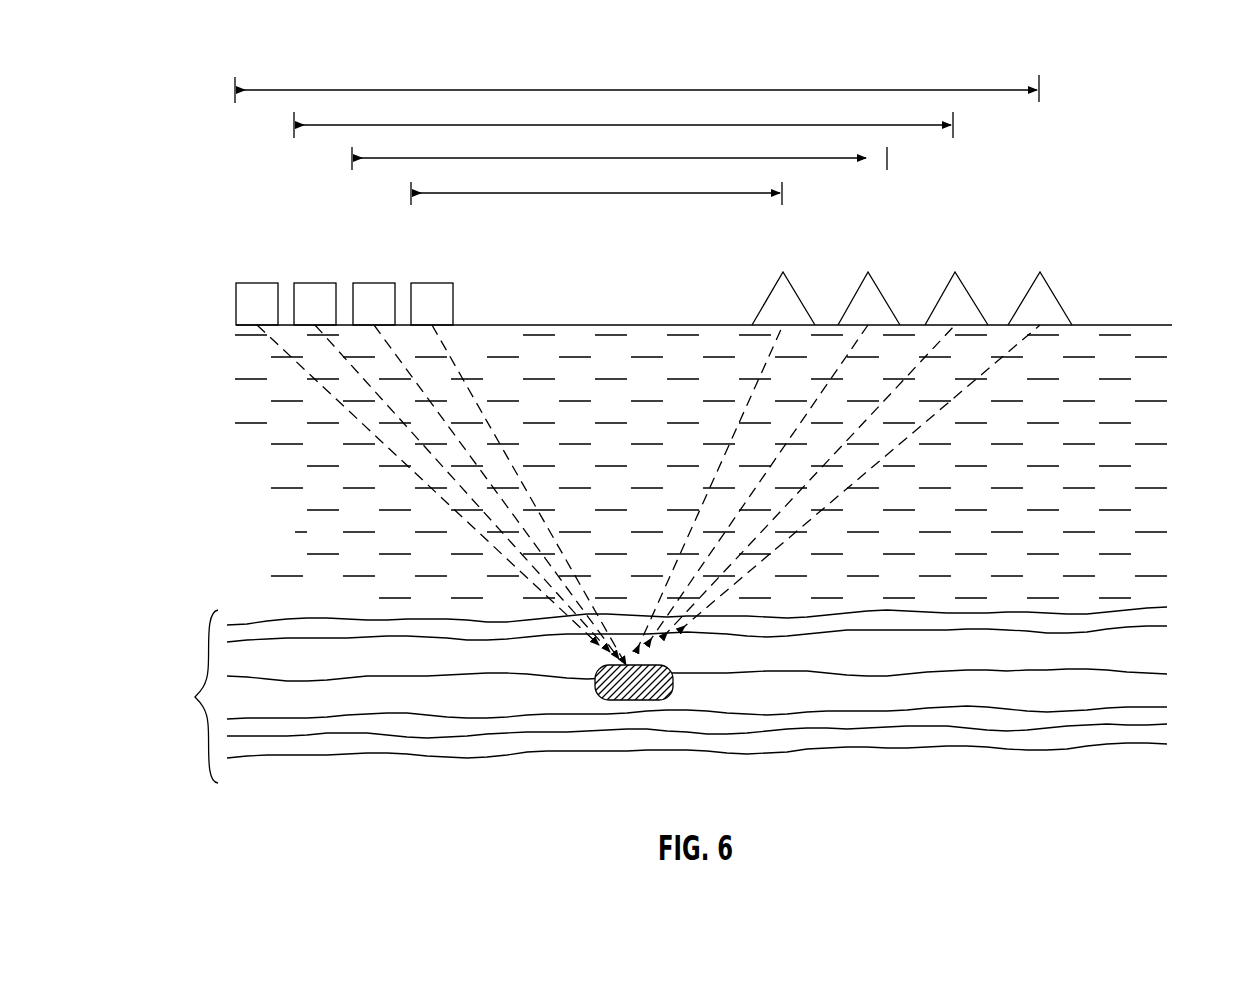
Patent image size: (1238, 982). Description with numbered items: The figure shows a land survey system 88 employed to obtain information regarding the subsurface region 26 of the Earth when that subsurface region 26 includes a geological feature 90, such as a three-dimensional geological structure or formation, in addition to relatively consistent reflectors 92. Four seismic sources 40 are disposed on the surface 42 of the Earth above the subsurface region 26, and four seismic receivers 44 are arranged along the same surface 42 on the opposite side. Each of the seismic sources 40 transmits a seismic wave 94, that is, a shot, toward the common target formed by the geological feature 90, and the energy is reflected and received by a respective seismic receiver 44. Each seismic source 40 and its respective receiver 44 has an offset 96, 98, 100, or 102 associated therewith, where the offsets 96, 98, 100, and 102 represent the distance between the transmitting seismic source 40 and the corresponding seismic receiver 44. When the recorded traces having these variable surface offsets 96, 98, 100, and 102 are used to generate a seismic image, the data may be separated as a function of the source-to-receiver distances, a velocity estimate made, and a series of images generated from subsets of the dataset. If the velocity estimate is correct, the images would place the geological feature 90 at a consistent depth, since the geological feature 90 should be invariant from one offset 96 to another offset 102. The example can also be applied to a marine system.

The subsurface region 26 is at (685, 695).
The seismic source 40 is at (431, 282).
The surface 42 is at (634, 325).
The seismic receiver 44 is at (1041, 271).
The land survey system 88 is at (1124, 100).
The geological feature 90 is at (612, 701).
The reflectors 92 is at (1148, 613).
The seismic wave 94 is at (470, 390).
The offset 96 is at (595, 193).
The offset 98 is at (607, 157).
The offset 100 is at (623, 124).
The offset 102 is at (638, 89).